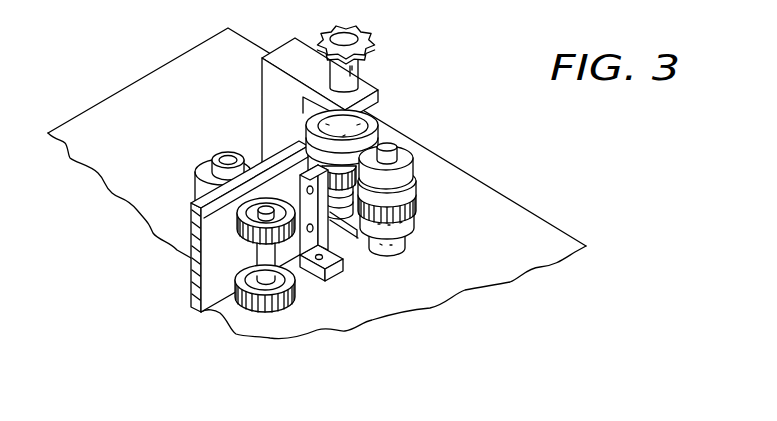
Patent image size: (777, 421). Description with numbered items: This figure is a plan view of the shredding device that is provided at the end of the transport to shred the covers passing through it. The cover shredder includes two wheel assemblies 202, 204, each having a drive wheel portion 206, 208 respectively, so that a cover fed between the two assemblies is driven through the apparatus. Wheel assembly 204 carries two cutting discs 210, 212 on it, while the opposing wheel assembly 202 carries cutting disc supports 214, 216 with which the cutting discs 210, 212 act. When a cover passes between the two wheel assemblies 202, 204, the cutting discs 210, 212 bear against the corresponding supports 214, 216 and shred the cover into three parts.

The wheel assembly 202 is at (412, 206).
The wheel assembly 204 is at (288, 143).
The drive wheel portion 206 is at (414, 193).
The drive wheel portion 208 is at (343, 197).
The cutting disc 210 is at (372, 118).
The cutting disc 212 is at (331, 262).
The cutting disc support 214 is at (408, 175).
The cutting disc support 216 is at (403, 226).